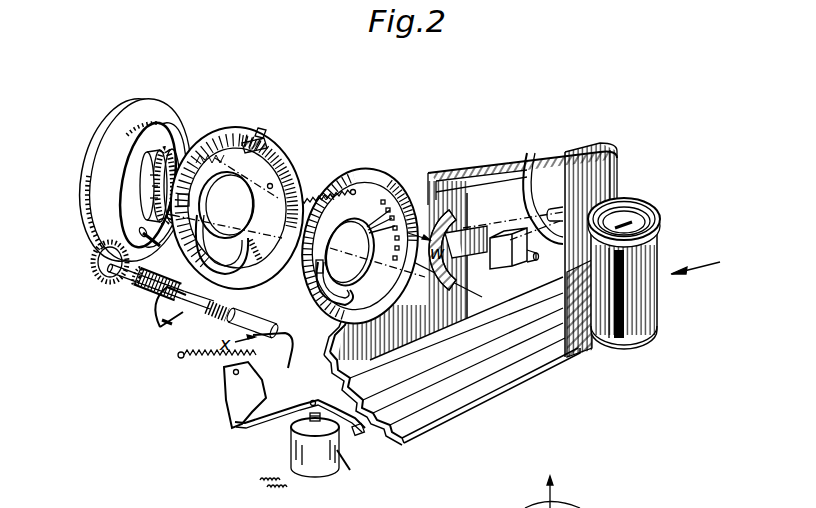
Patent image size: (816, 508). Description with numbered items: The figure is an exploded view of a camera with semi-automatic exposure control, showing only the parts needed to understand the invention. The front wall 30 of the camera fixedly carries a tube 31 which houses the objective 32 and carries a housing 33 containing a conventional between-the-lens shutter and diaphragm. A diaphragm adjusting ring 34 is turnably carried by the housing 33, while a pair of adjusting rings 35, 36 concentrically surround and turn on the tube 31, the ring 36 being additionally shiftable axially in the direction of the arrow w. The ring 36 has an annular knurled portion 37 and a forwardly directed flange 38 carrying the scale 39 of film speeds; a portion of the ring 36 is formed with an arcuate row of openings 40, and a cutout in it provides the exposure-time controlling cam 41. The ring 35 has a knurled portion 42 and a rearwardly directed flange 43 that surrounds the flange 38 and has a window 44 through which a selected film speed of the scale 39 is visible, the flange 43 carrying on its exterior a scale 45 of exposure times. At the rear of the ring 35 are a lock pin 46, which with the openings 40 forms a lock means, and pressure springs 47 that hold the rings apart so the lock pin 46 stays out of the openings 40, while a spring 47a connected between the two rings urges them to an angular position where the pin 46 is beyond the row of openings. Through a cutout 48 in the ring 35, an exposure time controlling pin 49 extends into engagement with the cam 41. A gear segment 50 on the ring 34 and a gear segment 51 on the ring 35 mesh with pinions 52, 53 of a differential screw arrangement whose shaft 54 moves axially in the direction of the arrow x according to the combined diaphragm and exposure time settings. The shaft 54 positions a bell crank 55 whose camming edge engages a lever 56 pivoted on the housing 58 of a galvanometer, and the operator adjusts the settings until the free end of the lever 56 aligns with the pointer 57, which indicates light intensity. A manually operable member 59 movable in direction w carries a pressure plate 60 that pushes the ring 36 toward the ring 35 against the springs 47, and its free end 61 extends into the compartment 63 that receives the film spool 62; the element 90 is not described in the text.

The front wall 30 is at (330, 360).
The tube 31 is at (160, 152).
The objective 32 is at (170, 153).
The housing 33 is at (153, 135).
The diaphragm adjusting ring 34 is at (113, 122).
The adjusting ring 35 is at (283, 145).
The adjusting ring 36 is at (374, 197).
The annular knurled portion 37 is at (361, 177).
The annular forwardly directed flange 38 is at (262, 300).
The scale of film speeds 39 is at (252, 272).
The arcuate row of openings 40 is at (350, 252).
The exposure-time controlling cam 41 is at (372, 252).
The knurled portion 42 is at (221, 128).
The rearwardly directed annular flange 43 is at (227, 198).
The window 44 is at (197, 199).
The scale of exposure times 45 is at (240, 133).
The lock pin 46 is at (288, 178).
The pressure springs 47 is at (262, 168).
The spring 47a is at (205, 156).
The cutout 48 is at (230, 290).
The exposure time controlling pin 49 is at (136, 229).
The gear segment 50 is at (100, 248).
The gear segment 51 is at (200, 310).
The pinion 52 is at (124, 290).
The pinion 53 is at (150, 303).
The shaft 54 is at (280, 332).
The bell crank 55 is at (235, 384).
The lever 56 is at (270, 418).
The pointer 57 is at (340, 452).
The housing of a galvanometer 58 is at (308, 475).
The manually operable member 59 is at (482, 226).
The pressure plate 60 is at (428, 185).
The free end 61 is at (553, 222).
The spool 62 is at (660, 237).
The compartment 63 is at (565, 183).
The wheel 90 is at (578, 506).